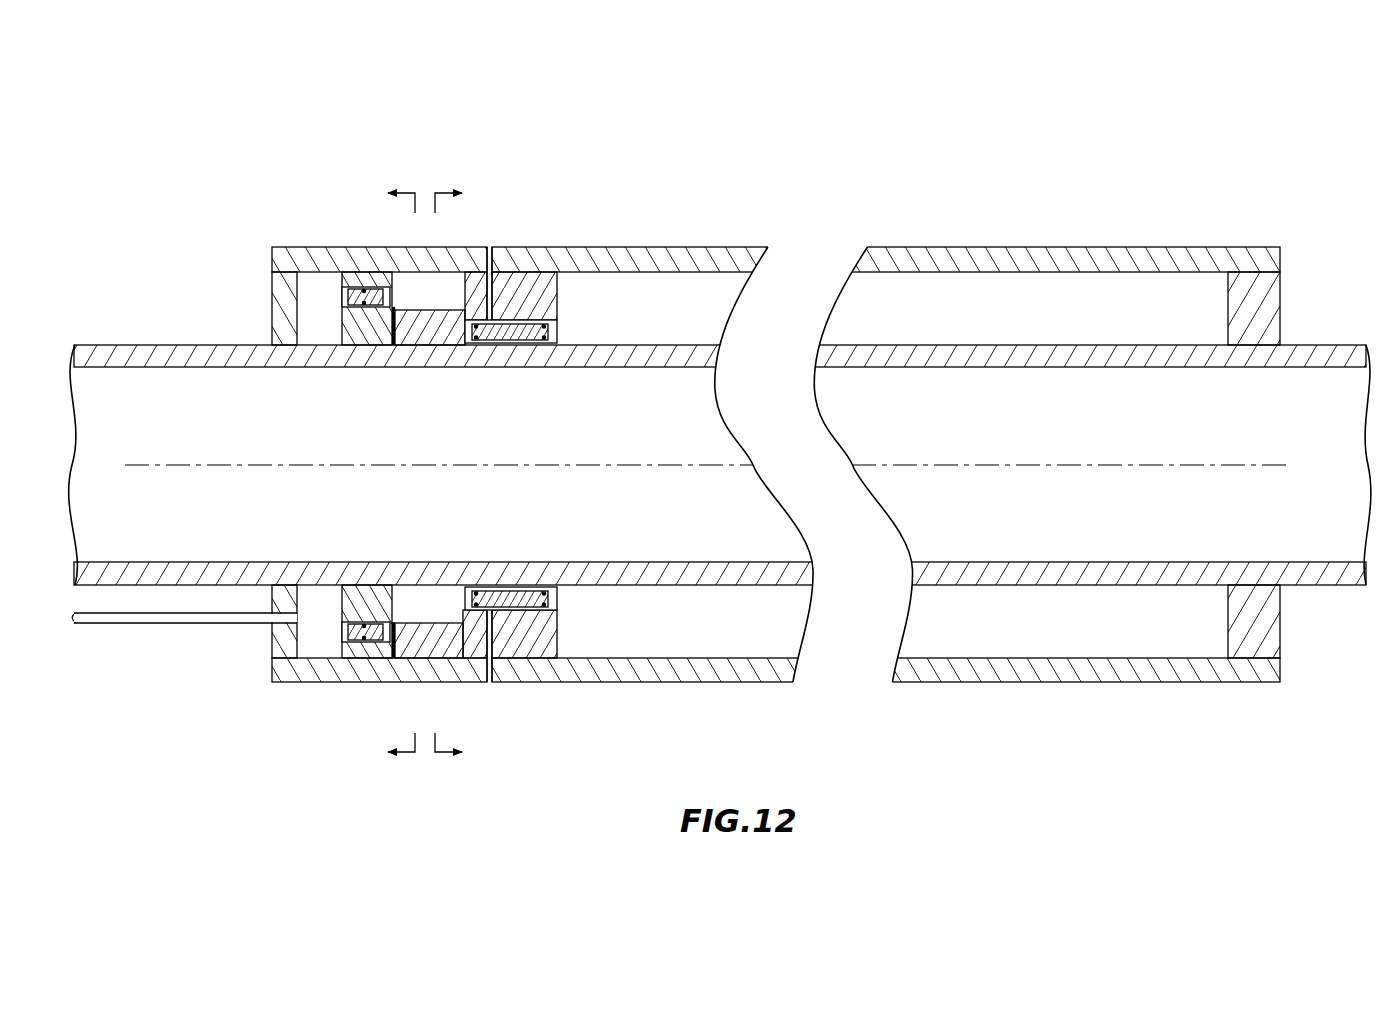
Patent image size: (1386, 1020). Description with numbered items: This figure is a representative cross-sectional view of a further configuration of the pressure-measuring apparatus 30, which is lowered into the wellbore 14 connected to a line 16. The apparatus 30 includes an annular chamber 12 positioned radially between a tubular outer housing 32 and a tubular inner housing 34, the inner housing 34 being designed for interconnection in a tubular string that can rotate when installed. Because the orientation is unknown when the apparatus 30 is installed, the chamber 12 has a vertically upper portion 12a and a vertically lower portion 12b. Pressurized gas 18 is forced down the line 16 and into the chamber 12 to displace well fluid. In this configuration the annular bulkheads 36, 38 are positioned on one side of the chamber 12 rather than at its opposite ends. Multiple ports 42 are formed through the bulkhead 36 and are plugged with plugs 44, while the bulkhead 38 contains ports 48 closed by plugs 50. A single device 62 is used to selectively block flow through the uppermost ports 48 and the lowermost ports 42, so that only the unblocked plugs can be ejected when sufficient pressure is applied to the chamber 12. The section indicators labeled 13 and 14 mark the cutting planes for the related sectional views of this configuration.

The apparatus 30 is at (727, 449).
The chamber 12 is at (776, 471).
The upper portion 12a is at (662, 278).
The lower portion 12b is at (680, 653).
The outer housing 32 is at (972, 684).
The inner housing 34 is at (1050, 586).
The line 16 is at (125, 625).
The pressurized gas 18 is at (308, 642).
The plugs 44 is at (348, 289).
The ports 42 is at (393, 297).
The bulkhead 36 is at (372, 653).
The device 62 is at (443, 660).
The bulkhead 38 is at (535, 660).
The ports 48 is at (558, 332).
The plugs 50 is at (510, 343).
The section line 13- 13 is at (468, 472).
The wellbore 14 is at (384, 472).